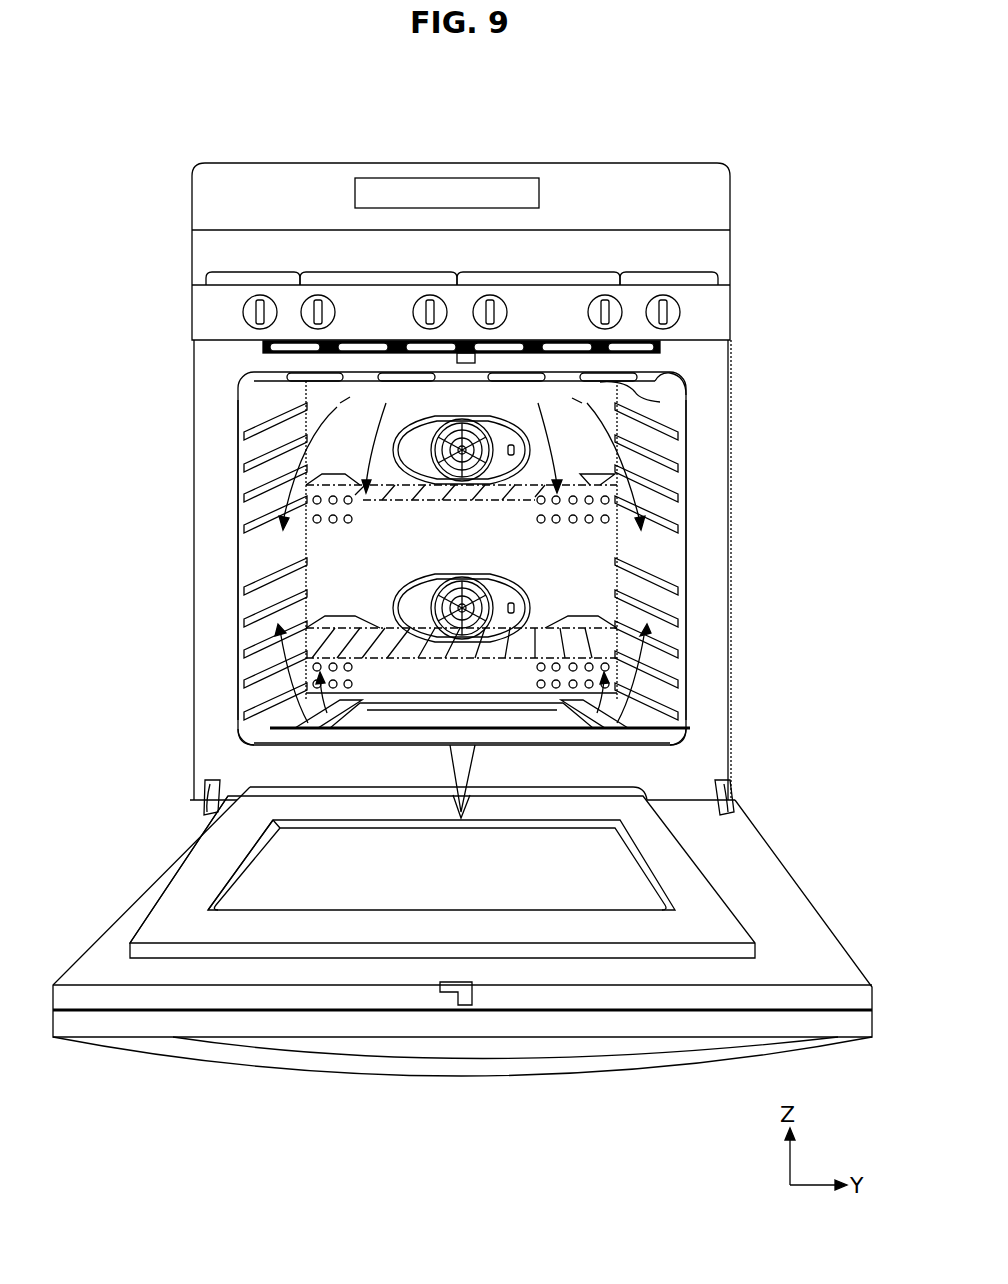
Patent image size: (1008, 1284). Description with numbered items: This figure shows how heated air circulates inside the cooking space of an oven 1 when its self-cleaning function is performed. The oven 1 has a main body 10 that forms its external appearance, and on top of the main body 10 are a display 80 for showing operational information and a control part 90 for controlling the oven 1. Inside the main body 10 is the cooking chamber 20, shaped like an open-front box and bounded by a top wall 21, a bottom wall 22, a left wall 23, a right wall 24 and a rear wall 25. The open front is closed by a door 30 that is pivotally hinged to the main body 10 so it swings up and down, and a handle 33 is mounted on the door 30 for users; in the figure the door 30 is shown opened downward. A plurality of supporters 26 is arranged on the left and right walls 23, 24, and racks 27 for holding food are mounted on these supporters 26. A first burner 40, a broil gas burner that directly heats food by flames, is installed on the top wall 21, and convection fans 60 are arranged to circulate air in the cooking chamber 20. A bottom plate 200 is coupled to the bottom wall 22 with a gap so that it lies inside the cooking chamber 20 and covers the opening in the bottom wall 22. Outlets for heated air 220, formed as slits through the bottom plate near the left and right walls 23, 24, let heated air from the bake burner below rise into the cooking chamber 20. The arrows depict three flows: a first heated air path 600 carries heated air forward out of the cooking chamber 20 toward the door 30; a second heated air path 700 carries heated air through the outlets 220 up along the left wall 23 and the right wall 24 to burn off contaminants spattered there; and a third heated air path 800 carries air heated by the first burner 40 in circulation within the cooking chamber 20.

The oven 1 is at (700, 83).
The main body 10 is at (745, 442).
The cooking chamber 20 is at (582, 577).
The top wall 21 is at (680, 385).
The bottom wall 22 is at (667, 740).
The left wall 23 is at (250, 570).
The right wall 24 is at (656, 543).
The rear wall 25 is at (345, 550).
The supporters 26 is at (680, 627).
The racks 27 is at (280, 630).
The door 30 is at (810, 885).
The handle 33 is at (450, 1075).
The first burner 40 is at (660, 402).
The convection fans 60 is at (505, 450).
The display 80 is at (473, 193).
The control part 90 is at (677, 312).
The bottom plate 200 is at (423, 723).
The outlets for heated air 220 is at (300, 706).
The first heated air path 600 is at (470, 772).
The second heated air path 700 is at (660, 700).
The third heated air path 800 is at (337, 407).